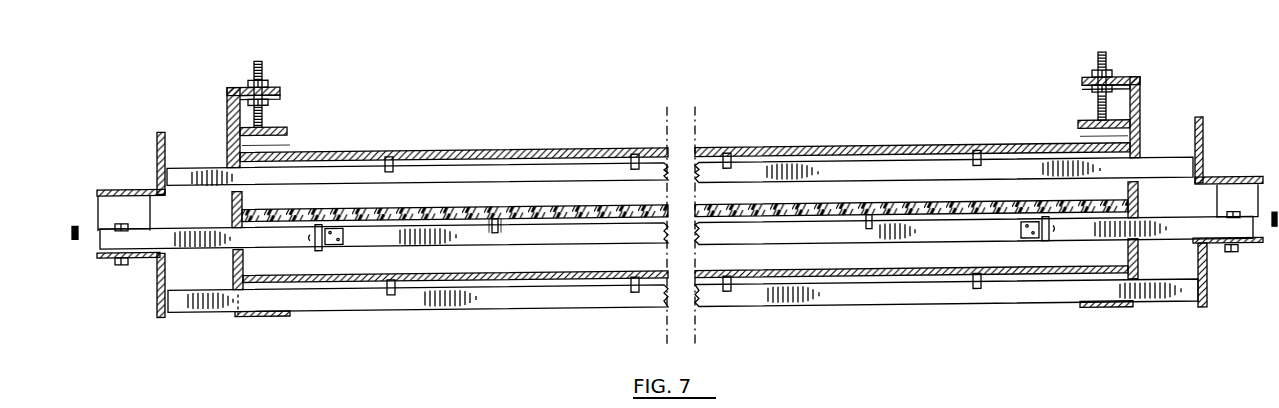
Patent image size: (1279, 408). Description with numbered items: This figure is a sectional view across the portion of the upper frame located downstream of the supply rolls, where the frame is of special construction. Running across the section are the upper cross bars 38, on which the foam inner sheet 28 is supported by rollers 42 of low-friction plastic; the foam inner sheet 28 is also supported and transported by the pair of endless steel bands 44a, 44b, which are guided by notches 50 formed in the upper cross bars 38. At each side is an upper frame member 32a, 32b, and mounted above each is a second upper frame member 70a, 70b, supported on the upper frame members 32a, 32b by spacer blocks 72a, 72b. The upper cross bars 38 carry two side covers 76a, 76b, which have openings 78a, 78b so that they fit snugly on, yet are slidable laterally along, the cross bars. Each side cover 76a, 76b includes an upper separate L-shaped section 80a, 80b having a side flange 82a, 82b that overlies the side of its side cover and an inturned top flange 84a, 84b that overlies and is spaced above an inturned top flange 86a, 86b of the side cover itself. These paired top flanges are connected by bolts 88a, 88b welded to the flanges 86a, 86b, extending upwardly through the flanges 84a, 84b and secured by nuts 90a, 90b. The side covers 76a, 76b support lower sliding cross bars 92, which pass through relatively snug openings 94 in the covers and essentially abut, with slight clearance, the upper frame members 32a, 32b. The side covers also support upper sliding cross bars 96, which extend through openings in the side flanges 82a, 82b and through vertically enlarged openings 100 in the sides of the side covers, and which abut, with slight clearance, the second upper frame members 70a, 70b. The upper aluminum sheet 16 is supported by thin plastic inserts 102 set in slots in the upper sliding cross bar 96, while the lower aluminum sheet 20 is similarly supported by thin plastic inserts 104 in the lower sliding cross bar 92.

The upper aluminum sheet 16 is at (547, 153).
The lower aluminum sheet 20 is at (722, 279).
The foam inner sheet 28 is at (742, 212).
The upper frame member 32a is at (157, 291).
The upper frame member 32b is at (1243, 257).
The upper cross bar 38 is at (628, 243).
The roller 42 is at (318, 254).
The endless steel band 44a is at (72, 230).
The endless steel band 44b is at (870, 238).
The notch 50 is at (498, 238).
The second upper frame member 70a is at (157, 149).
The second upper frame member 70b is at (1203, 133).
The spacer block 72a is at (98, 196).
The spacer block 72b is at (1258, 197).
The side cover 76a is at (230, 205).
The side cover 76b is at (1142, 210).
The opening 78a is at (233, 266).
The opening 78b is at (1138, 256).
The L-shaped section 80a is at (233, 82).
The L-shaped section 80b is at (1137, 84).
The side flange 82a is at (227, 112).
The side flange 82b is at (1140, 122).
The inturned top flange 84a is at (280, 93).
The inturned top flange 84b is at (1086, 88).
The inturned top flange 86a is at (288, 132).
The inturned top flange 86b is at (1078, 134).
The bolt 88a is at (258, 62).
The bolt 88b is at (1104, 62).
The nut 90a is at (268, 84).
The nut 90b is at (1098, 80).
The lower sliding cross bar 92 is at (322, 300).
The opening 94 is at (235, 285).
The upper sliding cross bar 96 is at (558, 190).
The vertically enlarged opening 100 is at (242, 150).
The thin plastic insert 102 is at (394, 160).
The thin plastic insert 104 is at (396, 297).